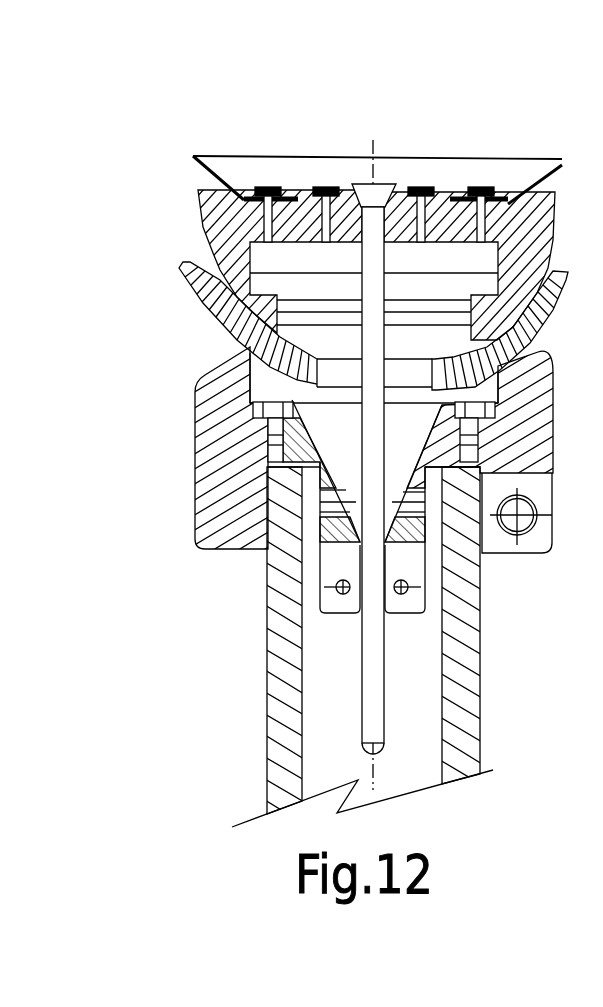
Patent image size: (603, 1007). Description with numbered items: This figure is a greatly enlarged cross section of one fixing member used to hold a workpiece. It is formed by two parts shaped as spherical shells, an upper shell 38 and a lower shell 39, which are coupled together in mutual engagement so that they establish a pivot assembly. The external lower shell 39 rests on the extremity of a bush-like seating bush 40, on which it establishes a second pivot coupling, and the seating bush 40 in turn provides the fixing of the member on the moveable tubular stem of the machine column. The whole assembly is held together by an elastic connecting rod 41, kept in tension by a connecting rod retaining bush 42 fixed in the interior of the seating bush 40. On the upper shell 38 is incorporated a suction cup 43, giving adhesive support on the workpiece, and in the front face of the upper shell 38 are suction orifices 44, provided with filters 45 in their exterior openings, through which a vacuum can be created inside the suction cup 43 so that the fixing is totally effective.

The upper shell 38 is at (320, 267).
The lower shell 39 is at (326, 333).
The seating bush 40 is at (185, 483).
The connecting rod 41 is at (284, 640).
The connecting rod retaining bush 42 is at (262, 437).
The suction cup 43 is at (322, 177).
The suction orifices 44 is at (447, 193).
The filters 45 is at (418, 175).